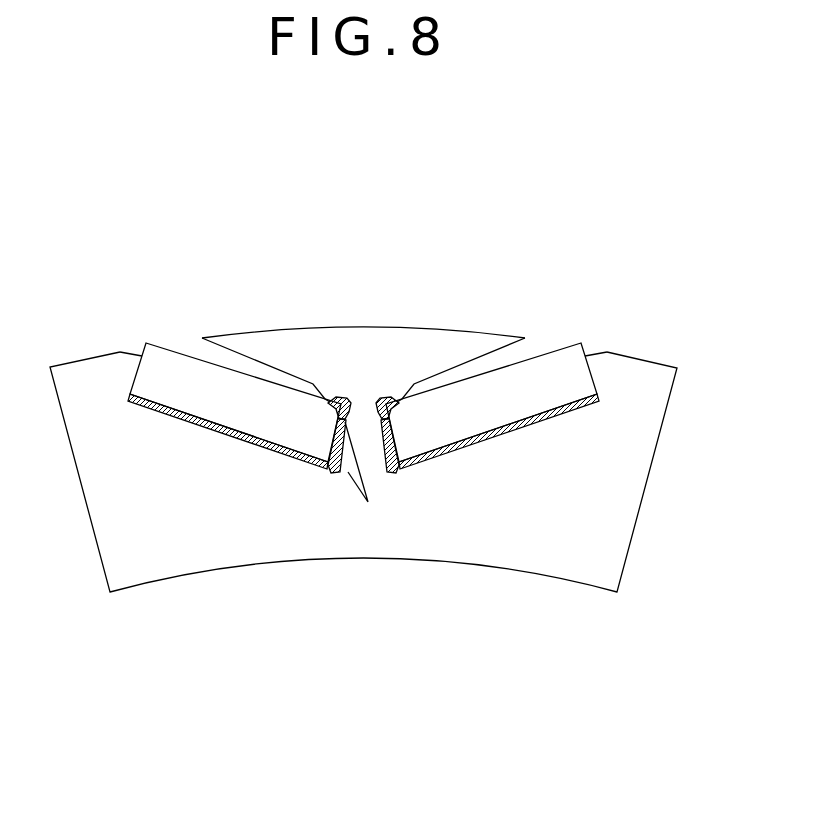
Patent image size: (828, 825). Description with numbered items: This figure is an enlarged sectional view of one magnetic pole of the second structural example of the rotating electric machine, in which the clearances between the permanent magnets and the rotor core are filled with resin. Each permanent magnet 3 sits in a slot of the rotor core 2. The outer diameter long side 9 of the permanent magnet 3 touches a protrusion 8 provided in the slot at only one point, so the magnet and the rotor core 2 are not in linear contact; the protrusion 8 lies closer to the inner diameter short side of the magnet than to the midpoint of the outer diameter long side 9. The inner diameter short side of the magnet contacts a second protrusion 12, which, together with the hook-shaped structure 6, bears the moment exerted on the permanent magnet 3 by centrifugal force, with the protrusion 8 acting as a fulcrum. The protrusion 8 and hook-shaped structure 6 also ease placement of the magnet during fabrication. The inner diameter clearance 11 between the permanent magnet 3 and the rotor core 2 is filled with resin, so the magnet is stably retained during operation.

The rotor core 2 is at (363, 559).
The permanent magnet 3 is at (363, 313).
The hook-shaped structure 6 is at (358, 265).
The protrusion 8 is at (362, 294).
The outer diameter long side 9 is at (355, 280).
The inner diameter clearance 11 is at (363, 568).
The second protrusion 12 is at (367, 538).